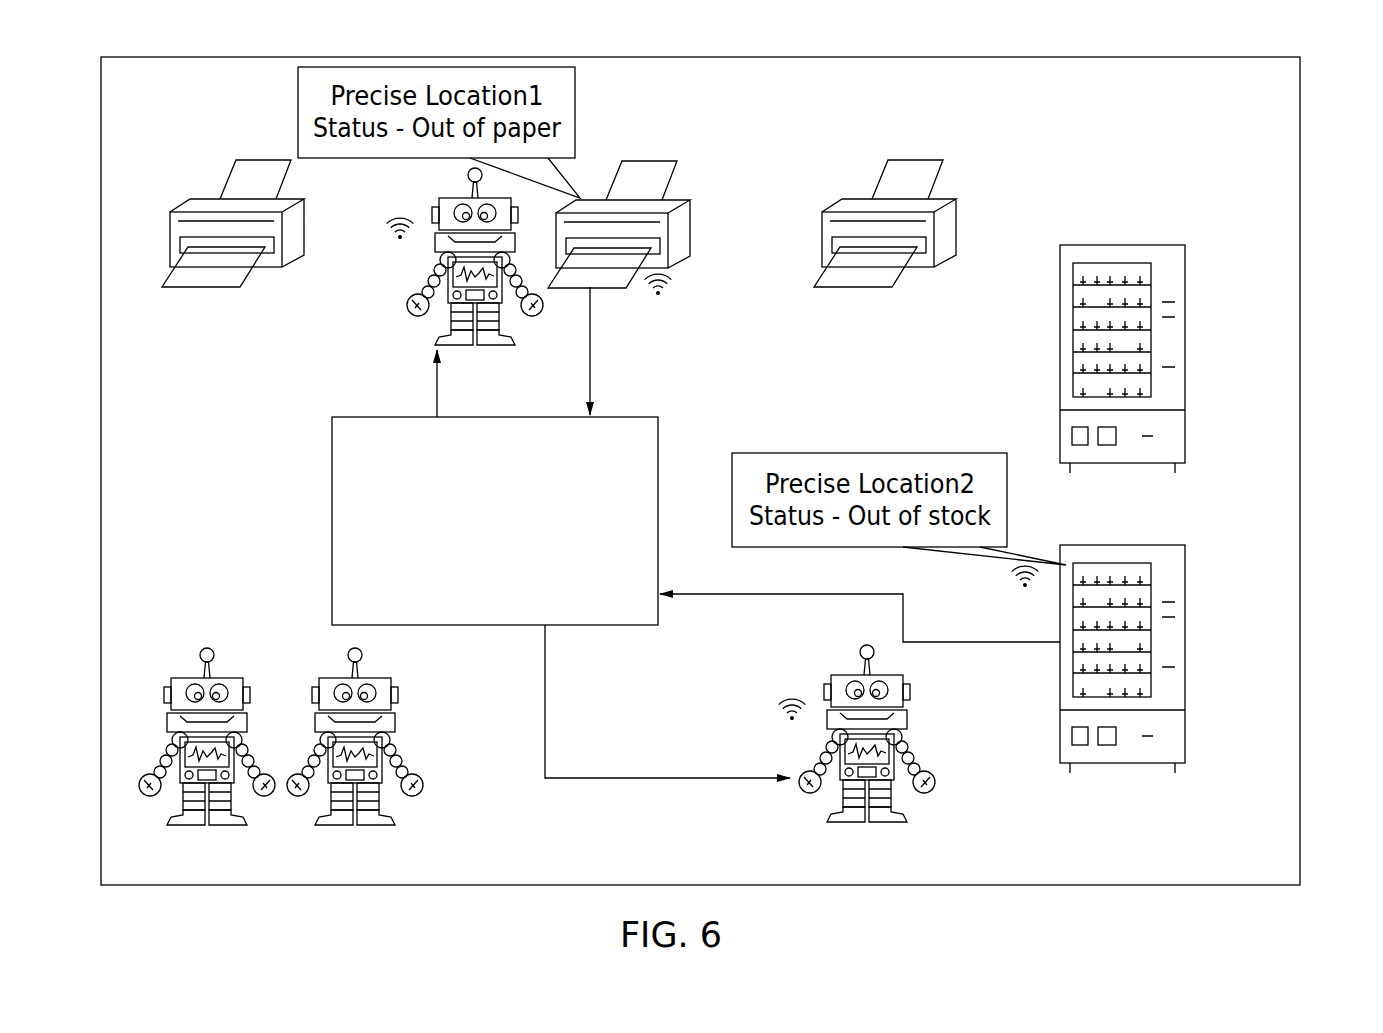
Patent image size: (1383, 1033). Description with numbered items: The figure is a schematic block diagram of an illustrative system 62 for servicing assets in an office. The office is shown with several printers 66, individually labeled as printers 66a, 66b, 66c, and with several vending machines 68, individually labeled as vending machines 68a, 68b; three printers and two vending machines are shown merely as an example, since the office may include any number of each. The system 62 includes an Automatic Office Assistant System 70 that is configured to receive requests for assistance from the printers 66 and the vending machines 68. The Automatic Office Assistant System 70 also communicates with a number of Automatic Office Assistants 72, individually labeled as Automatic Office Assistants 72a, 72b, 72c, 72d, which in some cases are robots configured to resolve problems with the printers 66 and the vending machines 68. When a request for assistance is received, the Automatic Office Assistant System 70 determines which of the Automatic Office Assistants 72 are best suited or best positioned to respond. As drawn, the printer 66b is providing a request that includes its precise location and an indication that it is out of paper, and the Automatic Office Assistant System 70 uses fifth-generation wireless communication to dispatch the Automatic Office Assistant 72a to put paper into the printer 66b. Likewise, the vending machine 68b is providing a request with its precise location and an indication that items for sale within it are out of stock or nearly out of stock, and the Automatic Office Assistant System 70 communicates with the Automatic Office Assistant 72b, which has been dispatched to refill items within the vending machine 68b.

The system for servicing assets in an office 62 is at (1310, 74).
The printers 66 is at (143, 173).
The printer 66a is at (281, 267).
The printer 66b is at (690, 266).
The printer 66c is at (957, 227).
The vending machines 68 is at (1167, 220).
The vending machine 68a is at (1185, 328).
The vending machine 68b is at (1185, 628).
The Automatic Office Assistant System 70 is at (332, 520).
The Automatic Office Assistants 72 is at (146, 488).
The Automatic Office Assistant 72a is at (435, 340).
The Automatic Office Assistant 72b is at (907, 815).
The Automatic Office Assistant 72c is at (167, 815).
The Automatic Office Assistant 72d is at (395, 815).